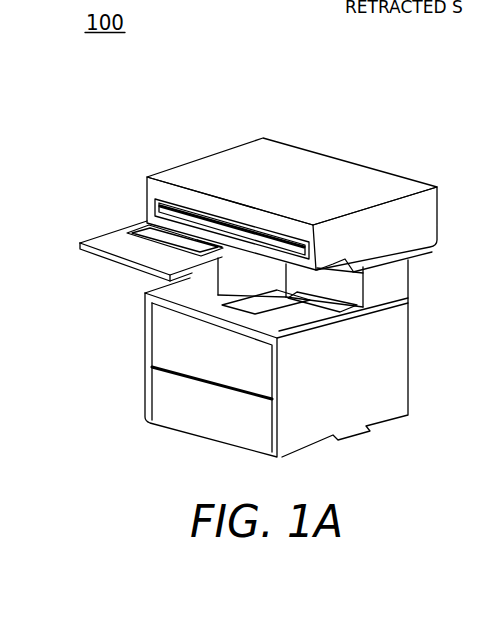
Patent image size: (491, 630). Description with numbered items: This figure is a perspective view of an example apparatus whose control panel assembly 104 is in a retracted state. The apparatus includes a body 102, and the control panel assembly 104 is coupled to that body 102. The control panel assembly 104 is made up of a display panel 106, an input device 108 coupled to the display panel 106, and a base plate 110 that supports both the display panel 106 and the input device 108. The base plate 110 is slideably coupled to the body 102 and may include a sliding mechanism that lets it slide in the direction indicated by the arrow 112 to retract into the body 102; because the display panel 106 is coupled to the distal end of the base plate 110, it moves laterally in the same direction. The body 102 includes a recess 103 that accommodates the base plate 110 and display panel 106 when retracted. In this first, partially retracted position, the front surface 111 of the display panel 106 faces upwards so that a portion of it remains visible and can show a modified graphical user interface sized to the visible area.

The body 102 is at (195, 160).
The recess 103 is at (230, 262).
The control panel assembly 104 is at (117, 190).
The display panel 106 is at (148, 221).
The input device 108 is at (94, 238).
The base plate 110 is at (246, 263).
The front surface 111 is at (197, 241).
The arrow 112 is at (100, 273).